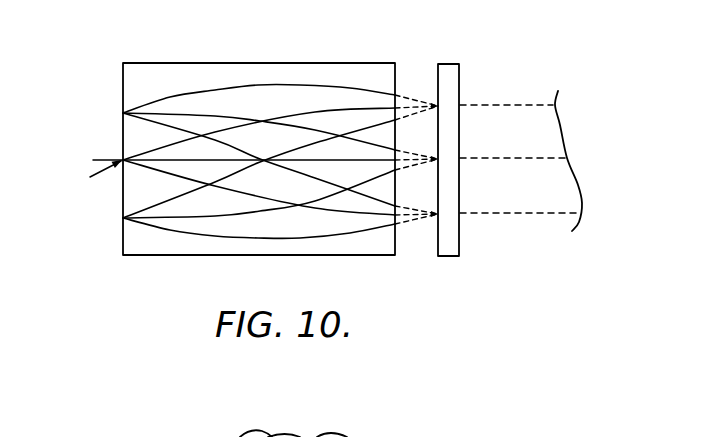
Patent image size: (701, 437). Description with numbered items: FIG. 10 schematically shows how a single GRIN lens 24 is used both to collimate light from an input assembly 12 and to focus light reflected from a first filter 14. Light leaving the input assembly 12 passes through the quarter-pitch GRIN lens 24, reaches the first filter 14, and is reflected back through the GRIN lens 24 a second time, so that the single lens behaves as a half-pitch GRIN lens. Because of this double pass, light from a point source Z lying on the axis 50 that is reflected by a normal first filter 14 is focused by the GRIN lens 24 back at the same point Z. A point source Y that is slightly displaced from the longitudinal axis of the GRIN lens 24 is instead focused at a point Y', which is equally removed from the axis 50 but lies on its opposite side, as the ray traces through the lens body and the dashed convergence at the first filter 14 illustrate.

The input assembly 12 is at (257, 148).
The first filter 14 is at (461, 77).
The GRIN lens 24 is at (182, 245).
The axis 50 is at (112, 157).